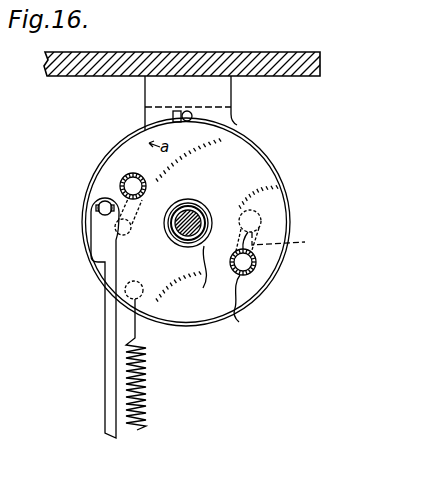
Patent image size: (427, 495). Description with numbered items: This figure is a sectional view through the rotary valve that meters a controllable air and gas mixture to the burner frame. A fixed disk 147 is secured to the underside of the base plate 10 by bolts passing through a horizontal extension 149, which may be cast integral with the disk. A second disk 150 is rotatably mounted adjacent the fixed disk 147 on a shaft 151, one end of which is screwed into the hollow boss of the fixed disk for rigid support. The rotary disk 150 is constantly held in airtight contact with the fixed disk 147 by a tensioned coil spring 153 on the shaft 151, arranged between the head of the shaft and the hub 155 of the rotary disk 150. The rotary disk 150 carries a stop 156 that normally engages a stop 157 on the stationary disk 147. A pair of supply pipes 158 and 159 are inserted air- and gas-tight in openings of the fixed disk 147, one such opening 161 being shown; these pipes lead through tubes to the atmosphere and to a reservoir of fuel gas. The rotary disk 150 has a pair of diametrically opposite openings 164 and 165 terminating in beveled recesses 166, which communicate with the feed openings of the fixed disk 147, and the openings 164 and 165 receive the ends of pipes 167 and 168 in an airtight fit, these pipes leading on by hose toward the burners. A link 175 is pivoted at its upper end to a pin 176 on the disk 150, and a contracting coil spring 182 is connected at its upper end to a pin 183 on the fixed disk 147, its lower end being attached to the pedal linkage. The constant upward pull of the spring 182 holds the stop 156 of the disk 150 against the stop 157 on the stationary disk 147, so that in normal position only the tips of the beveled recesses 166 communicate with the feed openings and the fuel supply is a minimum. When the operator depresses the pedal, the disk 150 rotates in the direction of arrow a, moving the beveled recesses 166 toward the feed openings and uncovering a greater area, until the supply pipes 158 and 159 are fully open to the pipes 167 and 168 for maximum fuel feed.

The base plate 10 is at (170, 58).
The disk 147 is at (289, 200).
The horizontal extension 149 is at (154, 96).
The second disk 150 is at (276, 170).
The shaft 151 is at (196, 216).
The tensioned coil spring 153 is at (189, 201).
The hub 155 is at (217, 222).
The stop 156 is at (173, 117).
The stop 157 is at (191, 114).
The pipe 158 is at (104, 258).
The pipe 159 is at (262, 222).
The opening 161 is at (398, 0).
The opening 164 is at (120, 182).
The opening 165 is at (248, 262).
The beveled recesses 166 is at (126, 234).
The pipe 167 is at (145, 188).
The pipe 168 is at (252, 285).
The link 175 is at (116, 300).
The pin 176 is at (99, 210).
The contracting coil spring 182 is at (146, 373).
The pin 183 is at (141, 277).